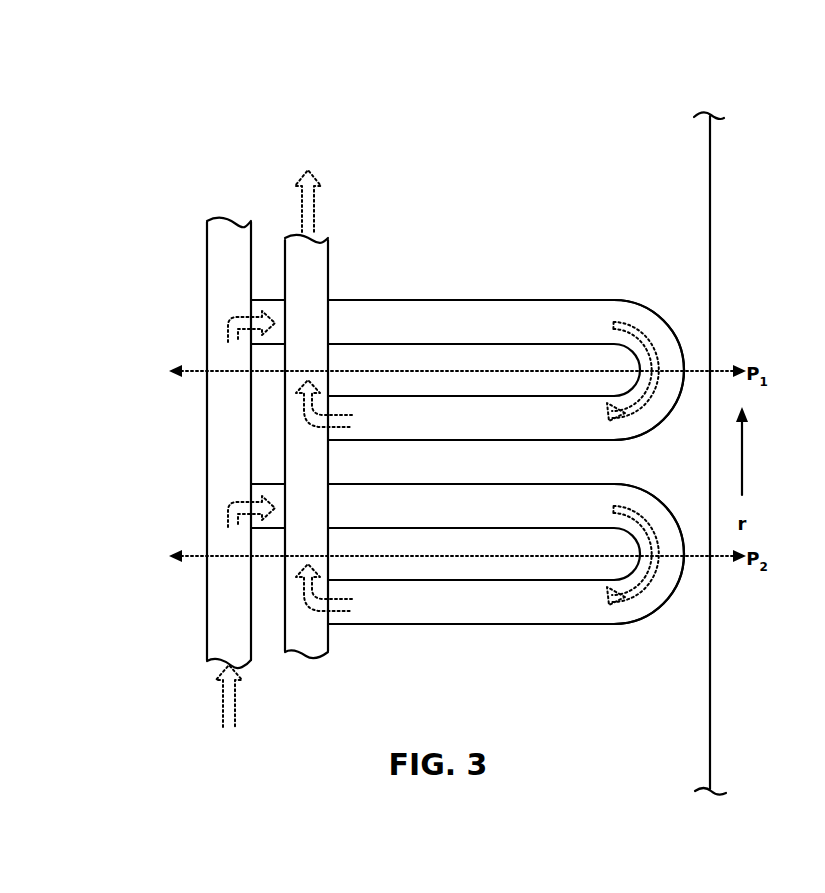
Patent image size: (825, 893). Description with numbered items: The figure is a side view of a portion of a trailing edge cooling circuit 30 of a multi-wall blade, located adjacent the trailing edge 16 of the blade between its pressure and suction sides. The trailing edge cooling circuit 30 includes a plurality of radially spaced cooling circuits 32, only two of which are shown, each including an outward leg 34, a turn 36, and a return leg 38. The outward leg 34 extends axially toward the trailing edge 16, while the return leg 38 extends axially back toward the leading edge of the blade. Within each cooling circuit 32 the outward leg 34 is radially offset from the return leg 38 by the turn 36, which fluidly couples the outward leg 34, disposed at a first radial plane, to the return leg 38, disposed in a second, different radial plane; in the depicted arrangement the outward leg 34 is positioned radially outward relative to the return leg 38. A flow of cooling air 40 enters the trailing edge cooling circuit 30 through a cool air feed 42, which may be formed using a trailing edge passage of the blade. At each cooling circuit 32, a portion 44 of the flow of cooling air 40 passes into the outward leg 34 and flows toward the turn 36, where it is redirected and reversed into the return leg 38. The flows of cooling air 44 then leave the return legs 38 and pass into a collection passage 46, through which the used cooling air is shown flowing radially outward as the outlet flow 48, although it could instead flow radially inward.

The trailing edge 16 is at (733, 724).
The trailing edge cooling circuit 30 is at (410, 140).
The cooling circuit 32 is at (476, 459).
The outward leg 34 is at (500, 299).
The turn 36 is at (673, 331).
The return leg 38 is at (418, 440).
The flow of cooling air 40 is at (235, 690).
The cool air feed 42 is at (231, 221).
The portion of the flow of cooling air 44 is at (240, 318).
The collection passage 46 is at (330, 254).
The outlet flow 48 is at (313, 190).